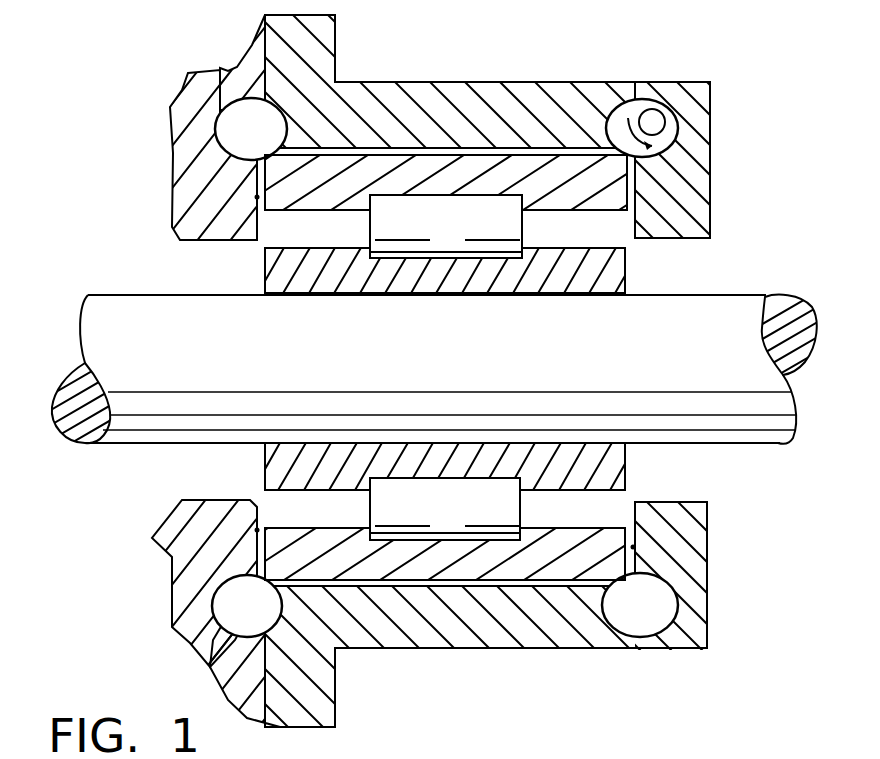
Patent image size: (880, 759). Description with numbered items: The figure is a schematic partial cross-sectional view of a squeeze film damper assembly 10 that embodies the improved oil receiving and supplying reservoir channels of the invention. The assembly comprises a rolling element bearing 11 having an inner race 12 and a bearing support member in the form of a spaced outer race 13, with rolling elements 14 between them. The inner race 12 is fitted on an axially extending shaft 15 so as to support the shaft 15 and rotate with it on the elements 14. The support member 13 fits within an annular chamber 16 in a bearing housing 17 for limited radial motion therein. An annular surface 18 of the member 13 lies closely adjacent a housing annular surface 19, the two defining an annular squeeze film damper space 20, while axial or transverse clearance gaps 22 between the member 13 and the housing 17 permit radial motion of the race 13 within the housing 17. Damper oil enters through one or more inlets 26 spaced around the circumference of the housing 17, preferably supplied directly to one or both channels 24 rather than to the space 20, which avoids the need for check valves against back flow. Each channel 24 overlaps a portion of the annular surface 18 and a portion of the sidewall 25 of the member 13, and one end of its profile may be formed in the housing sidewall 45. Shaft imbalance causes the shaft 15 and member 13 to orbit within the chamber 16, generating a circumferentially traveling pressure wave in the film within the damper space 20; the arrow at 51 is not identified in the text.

The squeeze film damper assembly 10 is at (735, 92).
The rolling element bearing 11 is at (218, 272).
The inner race 12 is at (625, 465).
The outer race 13 is at (615, 187).
The rolling elements 14 is at (465, 228).
The shaft 15 is at (450, 366).
The annular chamber 16 is at (623, 233).
The bearing housing 17 is at (250, 47).
The annular surface 18 is at (445, 152).
The housing annular surface 19 is at (515, 143).
The squeeze film damper space 20 is at (345, 135).
The clearance gaps 22 is at (262, 212).
The channel 24 is at (258, 141).
The sidewall 25 is at (257, 163).
The inlets 26 is at (228, 70).
The housing sidewall 45 is at (257, 197).
The bearing mount 51 is at (535, 714).